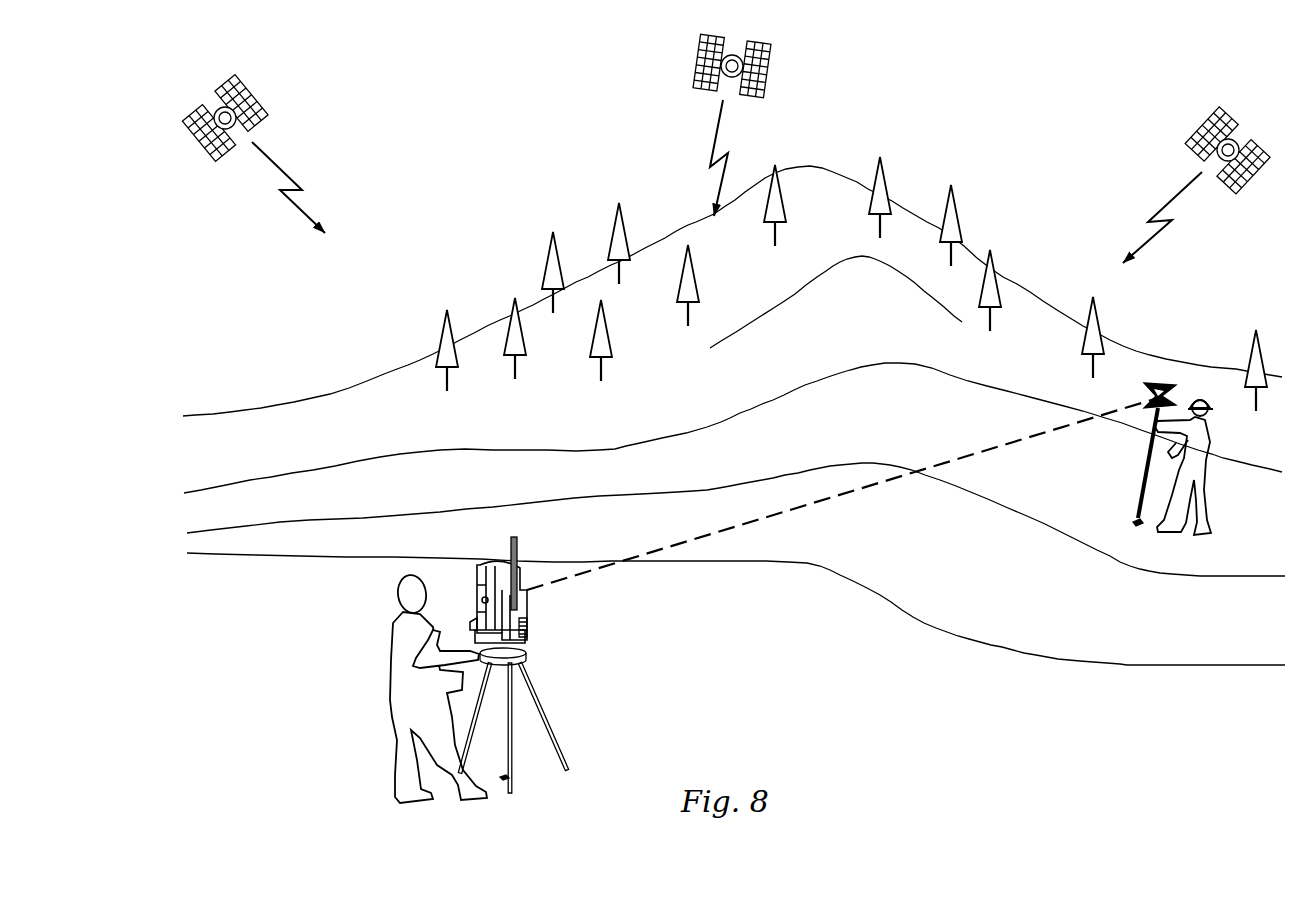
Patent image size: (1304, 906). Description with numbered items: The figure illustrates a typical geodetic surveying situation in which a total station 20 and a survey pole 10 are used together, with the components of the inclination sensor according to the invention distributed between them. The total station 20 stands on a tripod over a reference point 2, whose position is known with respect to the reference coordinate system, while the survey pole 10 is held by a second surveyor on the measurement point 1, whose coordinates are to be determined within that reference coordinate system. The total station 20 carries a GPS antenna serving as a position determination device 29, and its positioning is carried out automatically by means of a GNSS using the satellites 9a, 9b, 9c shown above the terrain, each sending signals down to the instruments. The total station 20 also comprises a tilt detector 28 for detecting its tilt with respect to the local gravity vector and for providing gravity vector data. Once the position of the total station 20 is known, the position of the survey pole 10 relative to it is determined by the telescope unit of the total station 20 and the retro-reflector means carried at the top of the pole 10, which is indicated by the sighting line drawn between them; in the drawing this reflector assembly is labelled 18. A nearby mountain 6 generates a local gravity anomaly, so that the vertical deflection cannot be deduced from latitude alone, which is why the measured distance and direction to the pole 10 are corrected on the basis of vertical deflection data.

The satellite 9a is at (282, 92).
The satellite 9b is at (680, 80).
The satellite 9c is at (1177, 112).
The mountain 6 is at (826, 210).
The reflector prism 18 is at (1147, 450).
The survey pole 10 is at (1111, 450).
The measurement point 1 is at (1137, 525).
The position determination device 29 is at (515, 548).
The tilt detector 28 is at (523, 635).
The total station 20 is at (560, 645).
The reference point 2 is at (505, 777).